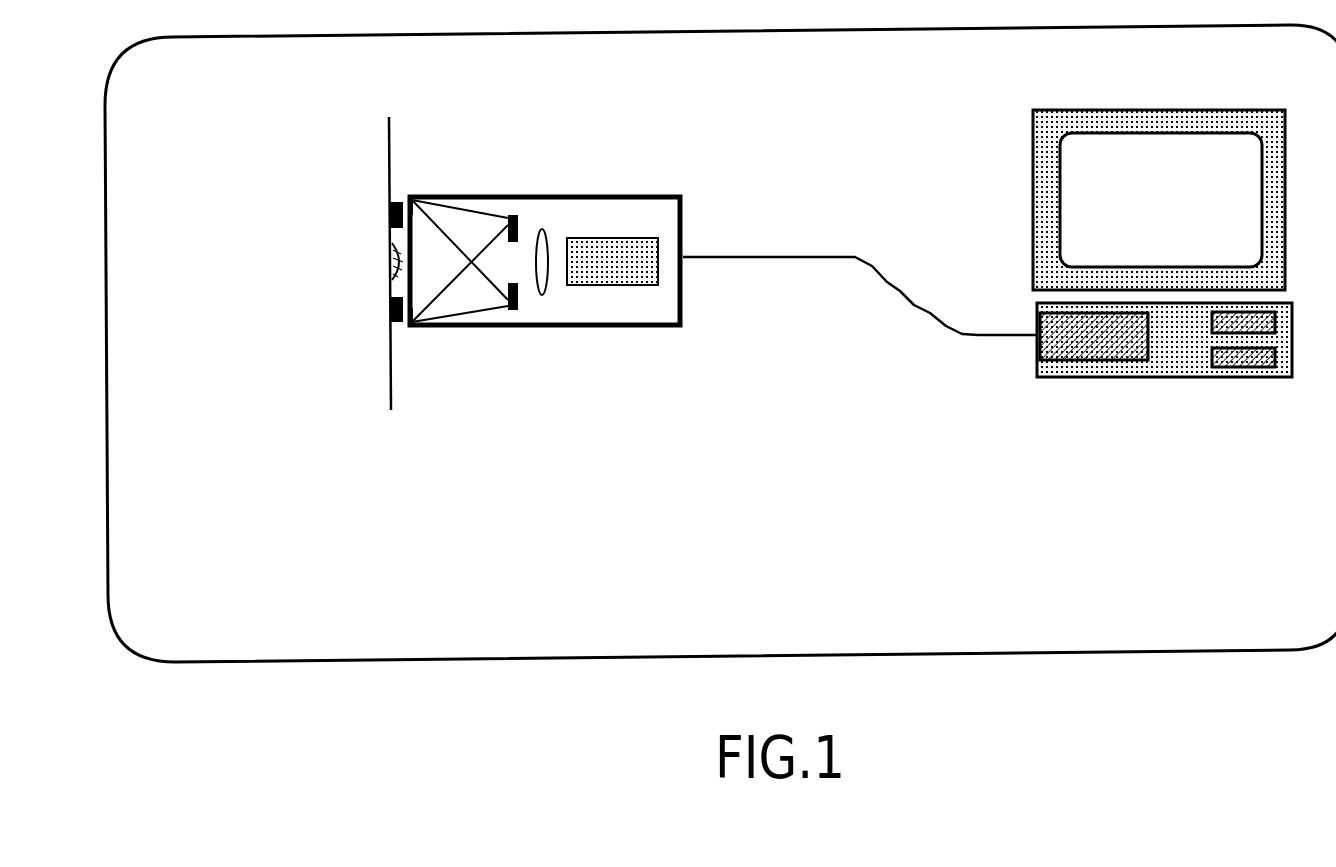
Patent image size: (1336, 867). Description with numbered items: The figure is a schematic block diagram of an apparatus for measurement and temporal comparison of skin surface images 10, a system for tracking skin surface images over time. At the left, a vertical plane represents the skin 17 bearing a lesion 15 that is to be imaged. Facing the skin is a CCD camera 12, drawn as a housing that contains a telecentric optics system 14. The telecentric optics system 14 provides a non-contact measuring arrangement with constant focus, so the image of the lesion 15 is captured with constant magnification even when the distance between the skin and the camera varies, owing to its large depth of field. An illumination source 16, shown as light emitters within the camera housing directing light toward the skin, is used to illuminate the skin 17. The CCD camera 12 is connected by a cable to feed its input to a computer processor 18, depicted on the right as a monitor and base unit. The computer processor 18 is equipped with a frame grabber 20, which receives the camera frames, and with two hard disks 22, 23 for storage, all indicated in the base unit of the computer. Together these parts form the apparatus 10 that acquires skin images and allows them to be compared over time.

The apparatus for measurement and temporal comparison of skin surface images 10 is at (588, 324).
The CCD camera 12 is at (648, 256).
The telecentric optics system 14 is at (540, 258).
The lesion 15 is at (390, 262).
The illumination source 16 is at (508, 232).
The skin 17 is at (389, 165).
The computer processor 18 is at (1183, 347).
The frame grabber 20 is at (1105, 347).
The hard disk 22 is at (1233, 315).
The hard disk 23 is at (1247, 353).